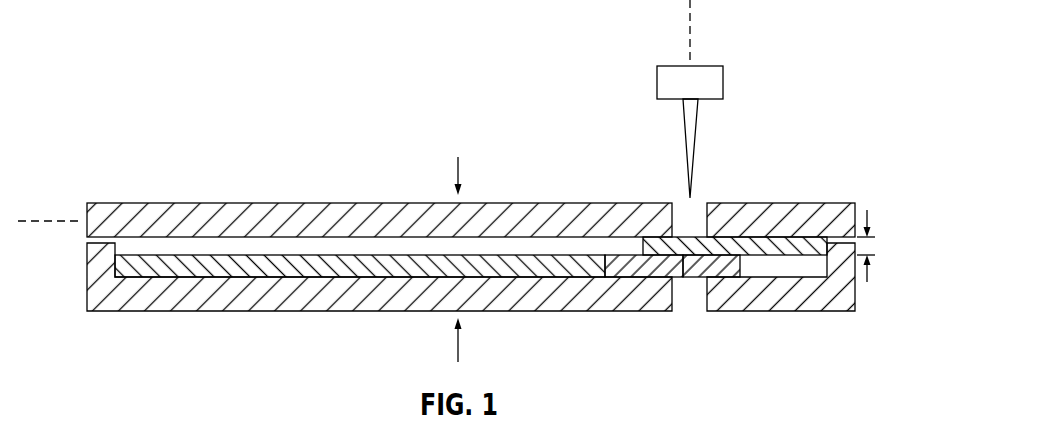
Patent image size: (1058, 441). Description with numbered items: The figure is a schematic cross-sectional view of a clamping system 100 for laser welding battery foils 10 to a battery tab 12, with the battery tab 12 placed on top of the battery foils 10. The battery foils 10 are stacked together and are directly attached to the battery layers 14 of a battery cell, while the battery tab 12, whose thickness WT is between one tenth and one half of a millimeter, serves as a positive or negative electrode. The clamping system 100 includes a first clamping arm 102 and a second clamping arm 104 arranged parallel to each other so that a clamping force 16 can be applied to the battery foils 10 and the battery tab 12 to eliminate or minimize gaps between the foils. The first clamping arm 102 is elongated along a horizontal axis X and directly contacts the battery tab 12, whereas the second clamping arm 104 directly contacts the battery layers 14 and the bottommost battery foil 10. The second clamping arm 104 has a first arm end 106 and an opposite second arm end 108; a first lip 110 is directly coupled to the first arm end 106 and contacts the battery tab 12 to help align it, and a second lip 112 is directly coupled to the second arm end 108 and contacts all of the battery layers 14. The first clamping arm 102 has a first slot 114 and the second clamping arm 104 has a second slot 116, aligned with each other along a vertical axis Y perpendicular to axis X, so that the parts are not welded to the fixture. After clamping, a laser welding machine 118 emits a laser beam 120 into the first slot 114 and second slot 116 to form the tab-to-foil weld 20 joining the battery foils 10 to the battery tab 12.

The clamping system 100 is at (571, 154).
The first clamping arm 102 is at (185, 202).
The second clamping arm 104 is at (320, 296).
The first arm end 106 is at (792, 294).
The second arm end 108 is at (130, 300).
The first lip 110 is at (858, 290).
The second lip 112 is at (86, 284).
The first slot 114 is at (707, 205).
The second slot 116 is at (672, 294).
The laser welding machine 118 is at (689, 66).
The laser beam 120 is at (695, 133).
The battery foils 10 is at (724, 268).
The battery tab 12 is at (793, 247).
The battery layers 14 is at (508, 280).
The clamping force 16 is at (457, 174).
The tab-to-foil weld 20 is at (735, 262).
The thickness of battery tab WT is at (868, 222).
The first or horizontal axis X is at (60, 218).
The second or vertical axis Y is at (692, 27).